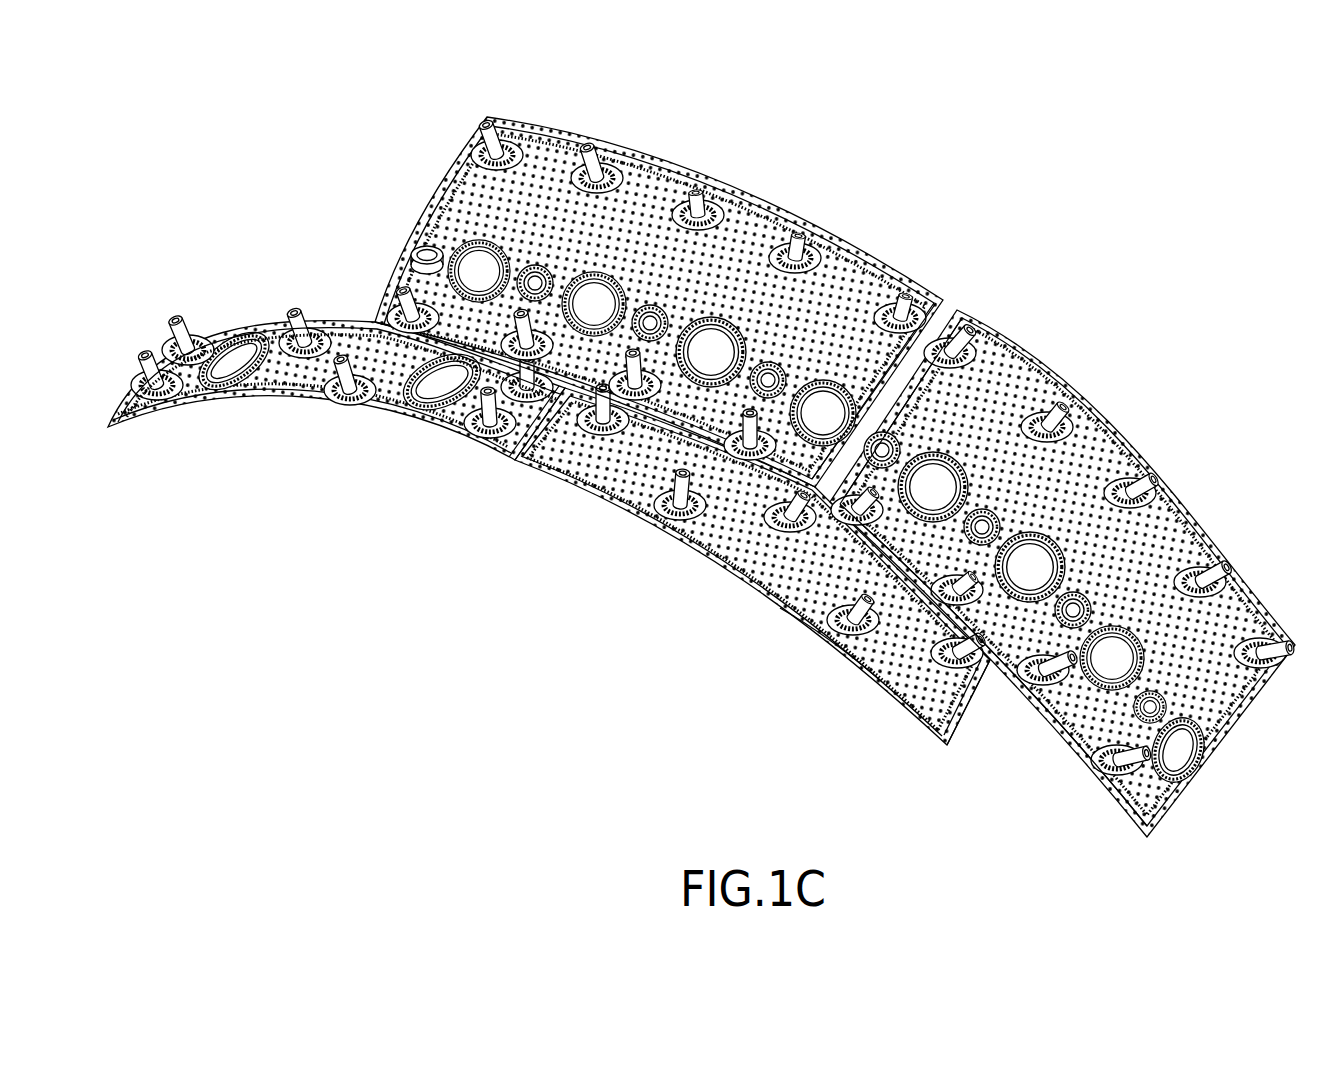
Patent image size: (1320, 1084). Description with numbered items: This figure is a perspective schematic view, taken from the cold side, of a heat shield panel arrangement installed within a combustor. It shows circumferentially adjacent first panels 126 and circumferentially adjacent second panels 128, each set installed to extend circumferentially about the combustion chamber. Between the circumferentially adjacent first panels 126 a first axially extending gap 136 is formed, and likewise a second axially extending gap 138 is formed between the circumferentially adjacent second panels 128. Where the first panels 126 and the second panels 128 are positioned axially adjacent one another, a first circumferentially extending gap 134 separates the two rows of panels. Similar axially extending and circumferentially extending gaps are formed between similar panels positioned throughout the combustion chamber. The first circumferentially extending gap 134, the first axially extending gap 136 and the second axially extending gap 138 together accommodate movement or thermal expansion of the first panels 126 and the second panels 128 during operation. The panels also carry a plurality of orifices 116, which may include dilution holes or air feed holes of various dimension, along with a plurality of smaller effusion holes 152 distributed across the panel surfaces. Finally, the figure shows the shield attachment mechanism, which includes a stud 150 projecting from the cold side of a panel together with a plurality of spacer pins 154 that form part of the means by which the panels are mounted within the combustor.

The orifices 116 is at (1110, 667).
The first panels 126 is at (272, 405).
The second panels 128 is at (740, 178).
The first circumferentially extending gap 134 is at (366, 321).
The first axially extending gap 136 is at (513, 462).
The second axially extending gap 138 is at (950, 300).
The stud 150 is at (877, 678).
The effusion holes 152 is at (924, 728).
The spacer pins 154 is at (840, 653).